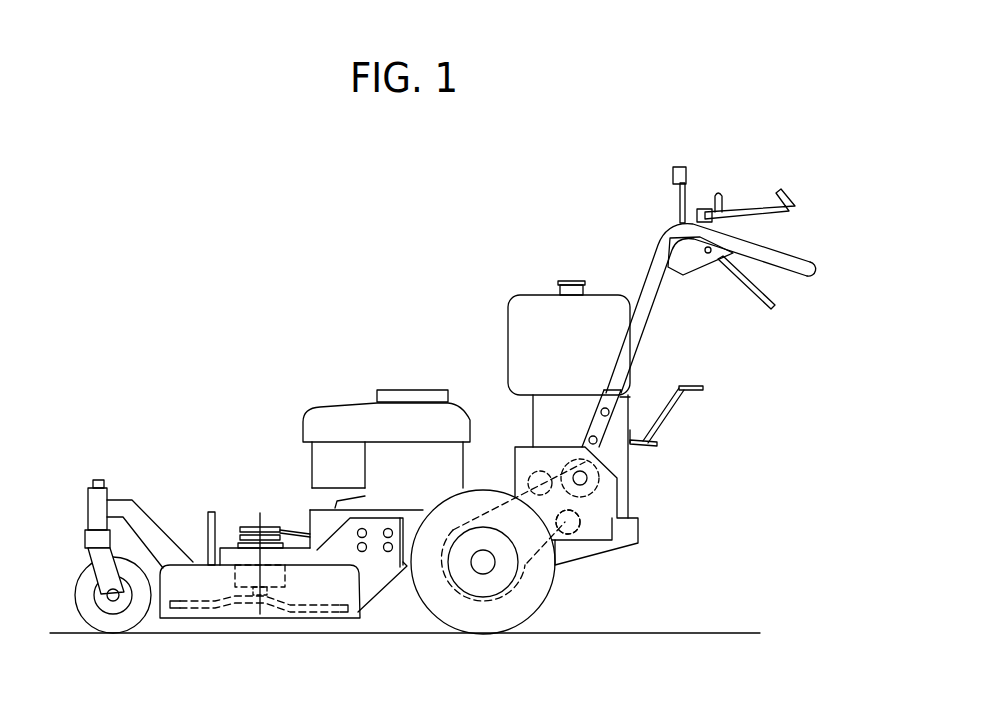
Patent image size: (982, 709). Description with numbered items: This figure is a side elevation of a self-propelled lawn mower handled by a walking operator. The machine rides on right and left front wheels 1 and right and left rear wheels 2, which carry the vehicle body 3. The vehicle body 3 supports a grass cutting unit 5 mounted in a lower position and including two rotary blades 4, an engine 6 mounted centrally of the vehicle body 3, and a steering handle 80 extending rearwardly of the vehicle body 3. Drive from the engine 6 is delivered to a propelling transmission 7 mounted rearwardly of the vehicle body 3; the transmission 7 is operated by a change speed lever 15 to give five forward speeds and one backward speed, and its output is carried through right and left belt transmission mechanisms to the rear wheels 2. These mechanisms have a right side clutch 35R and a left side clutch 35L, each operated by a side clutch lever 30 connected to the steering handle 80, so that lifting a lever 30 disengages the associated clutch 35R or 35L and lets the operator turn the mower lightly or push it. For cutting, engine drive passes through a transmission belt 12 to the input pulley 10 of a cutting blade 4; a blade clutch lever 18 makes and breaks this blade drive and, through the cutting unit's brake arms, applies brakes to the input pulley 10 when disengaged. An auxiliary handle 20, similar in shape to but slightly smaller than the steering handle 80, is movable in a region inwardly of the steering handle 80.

The front wheels 1 is at (80, 580).
The rear wheels 2 is at (545, 590).
The vehicle body 3 is at (377, 572).
The rotary blades 4 is at (193, 607).
The grass cutting unit 5 is at (261, 622).
The engine 6 is at (407, 412).
The propelling transmission 7 is at (533, 440).
The input pulley 10 is at (247, 523).
The transmission belt 12 is at (297, 530).
The change speed lever 15 is at (684, 386).
The blade clutch lever 18 is at (673, 177).
The auxiliary handle 20 is at (780, 190).
The side clutch lever 30 is at (773, 307).
The left side clutch 35L is at (592, 527).
The right side clutch 35R is at (568, 522).
The steering handle 80 is at (813, 265).